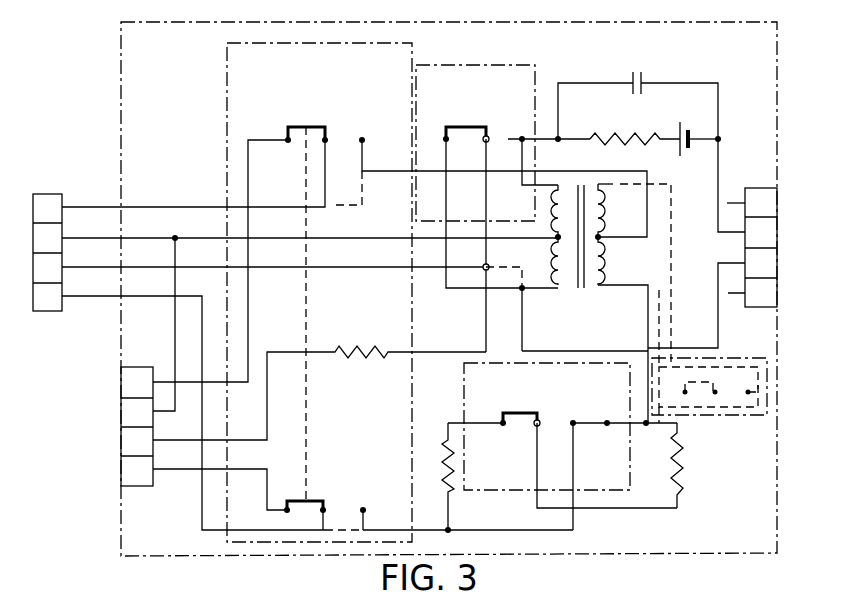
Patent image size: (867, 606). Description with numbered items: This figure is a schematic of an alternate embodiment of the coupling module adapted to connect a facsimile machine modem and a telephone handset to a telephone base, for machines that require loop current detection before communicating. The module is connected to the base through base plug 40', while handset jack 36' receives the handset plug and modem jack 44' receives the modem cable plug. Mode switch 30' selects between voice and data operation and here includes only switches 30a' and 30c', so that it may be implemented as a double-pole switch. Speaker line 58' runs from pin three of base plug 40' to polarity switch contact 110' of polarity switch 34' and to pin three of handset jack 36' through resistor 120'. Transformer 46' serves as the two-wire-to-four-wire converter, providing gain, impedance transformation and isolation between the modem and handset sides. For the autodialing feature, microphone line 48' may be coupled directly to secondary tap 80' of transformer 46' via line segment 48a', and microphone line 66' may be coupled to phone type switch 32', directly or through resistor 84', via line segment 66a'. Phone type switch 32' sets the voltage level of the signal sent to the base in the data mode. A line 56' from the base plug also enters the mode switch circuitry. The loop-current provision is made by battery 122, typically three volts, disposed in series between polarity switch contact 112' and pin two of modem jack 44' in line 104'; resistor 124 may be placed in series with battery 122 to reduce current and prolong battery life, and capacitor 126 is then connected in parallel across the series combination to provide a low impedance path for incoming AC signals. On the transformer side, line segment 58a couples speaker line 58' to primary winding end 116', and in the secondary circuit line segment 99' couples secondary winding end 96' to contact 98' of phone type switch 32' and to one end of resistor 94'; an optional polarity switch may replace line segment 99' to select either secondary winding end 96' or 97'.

The mode switch 30' is at (287, 292).
The mode switch section 30a' is at (240, 235).
The mode switch section 30c' is at (256, 487).
The phone type switch 32' is at (547, 443).
The polarity switch 34' is at (592, 238).
The handset jack 36' is at (104, 447).
The base plug 40' is at (54, 249).
The modem jack 44' is at (760, 246).
The transformer 46' is at (576, 261).
The microphone line 48' is at (193, 173).
The line segment 48a' is at (491, 187).
The conductor from base pin 2 56' is at (310, 309).
The speaker line 58' is at (274, 253).
The line segment 58a is at (488, 266).
The microphone line 66' is at (317, 399).
The line segment 66a' is at (372, 503).
The secondary tap 80' is at (629, 248).
The resistor 84' is at (437, 464).
The resistor 94' is at (703, 465).
The secondary winding end 96' is at (623, 354).
The secondary winding end 97' is at (625, 164).
The phone type switch contact 98' is at (562, 471).
The line segment 99' is at (585, 332).
The line 104' is at (689, 297).
The polarity switch contact 110' is at (472, 224).
The polarity switch contact 112' is at (542, 141).
The primary winding end 116' is at (545, 318).
The resistor 120' is at (319, 377).
The battery 122 is at (688, 128).
The resistor 124 is at (620, 135).
The capacitor 126 is at (632, 75).